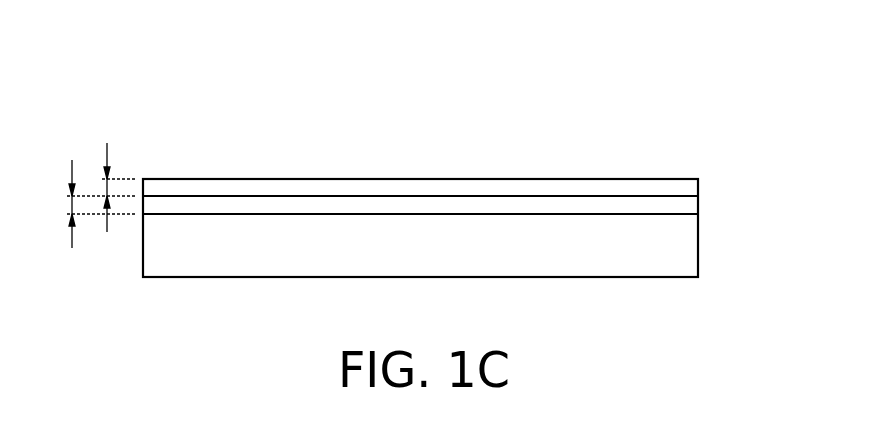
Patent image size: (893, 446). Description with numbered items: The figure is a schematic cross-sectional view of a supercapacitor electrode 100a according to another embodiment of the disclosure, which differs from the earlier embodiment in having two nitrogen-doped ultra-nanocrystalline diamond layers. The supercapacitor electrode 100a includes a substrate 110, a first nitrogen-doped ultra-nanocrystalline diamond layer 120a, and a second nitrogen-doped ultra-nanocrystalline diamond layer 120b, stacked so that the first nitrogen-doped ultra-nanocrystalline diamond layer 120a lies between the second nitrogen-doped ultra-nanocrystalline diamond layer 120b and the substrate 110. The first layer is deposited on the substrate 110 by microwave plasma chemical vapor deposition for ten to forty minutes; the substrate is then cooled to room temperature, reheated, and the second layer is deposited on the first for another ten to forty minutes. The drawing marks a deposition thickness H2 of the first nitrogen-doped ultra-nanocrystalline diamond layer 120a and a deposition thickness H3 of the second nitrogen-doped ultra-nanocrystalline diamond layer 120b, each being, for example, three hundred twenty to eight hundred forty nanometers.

The supercapacitor electrode 100a is at (787, 303).
The substrate 110 is at (687, 248).
The first nitrogen-doped ultra-nanocrystalline diamond layer 120a is at (687, 207).
The second nitrogen-doped ultra-nanocrystalline diamond layer 120b is at (687, 189).
The deposition thickness H2 is at (72, 205).
The deposition thickness H3 is at (107, 188).